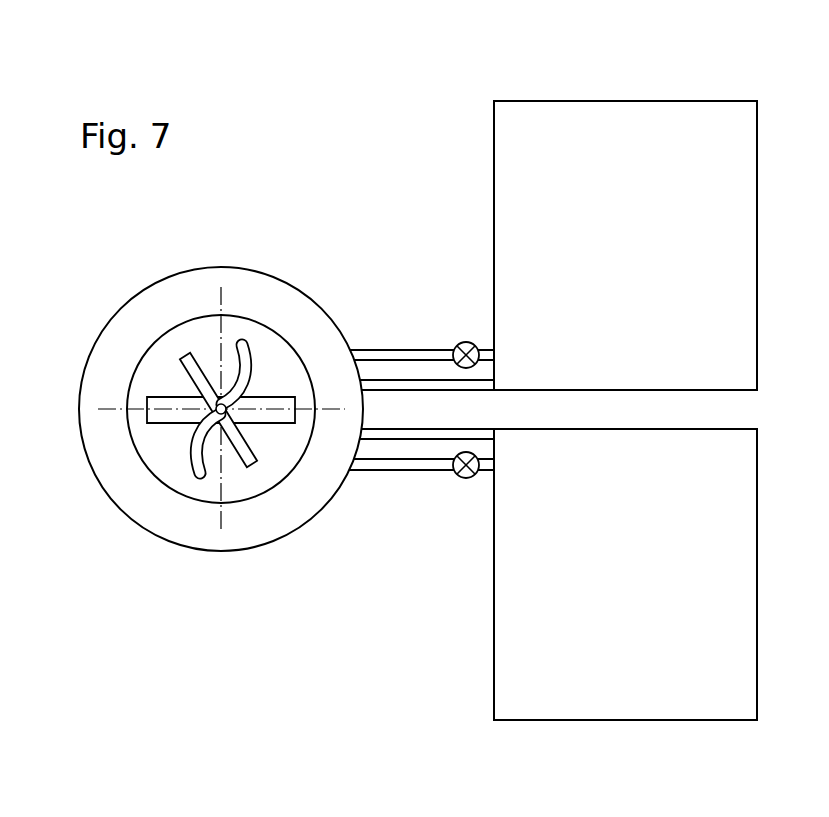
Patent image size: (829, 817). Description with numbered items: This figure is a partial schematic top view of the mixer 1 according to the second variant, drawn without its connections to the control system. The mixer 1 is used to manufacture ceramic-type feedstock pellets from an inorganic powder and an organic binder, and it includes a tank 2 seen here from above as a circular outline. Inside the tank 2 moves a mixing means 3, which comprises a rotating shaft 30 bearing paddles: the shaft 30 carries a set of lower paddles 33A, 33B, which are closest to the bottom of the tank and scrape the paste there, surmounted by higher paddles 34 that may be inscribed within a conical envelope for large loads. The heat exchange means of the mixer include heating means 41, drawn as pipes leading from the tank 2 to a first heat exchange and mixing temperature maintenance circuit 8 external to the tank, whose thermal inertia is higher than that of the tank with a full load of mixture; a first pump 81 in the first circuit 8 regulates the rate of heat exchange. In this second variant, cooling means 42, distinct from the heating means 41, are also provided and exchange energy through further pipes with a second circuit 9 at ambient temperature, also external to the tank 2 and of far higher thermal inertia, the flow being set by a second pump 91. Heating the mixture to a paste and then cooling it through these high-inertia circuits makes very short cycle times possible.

The mixer 1 is at (115, 238).
The tank 2 is at (120, 468).
The mixing means 3 is at (262, 342).
The rotating shaft 30 is at (229, 388).
The lower paddles 33A is at (148, 403).
The lower paddles 33B is at (208, 424).
The higher paddles 34 is at (183, 352).
The heating means 41 is at (375, 352).
The cooling means 42 is at (392, 437).
The first heat exchange and mixing temperature maintenance circuit 8 is at (602, 125).
The first pump 81 is at (475, 343).
The second circuit 9 is at (542, 680).
The second pump 91 is at (475, 483).